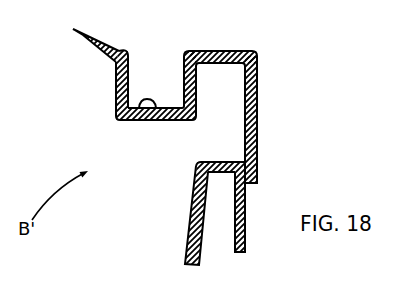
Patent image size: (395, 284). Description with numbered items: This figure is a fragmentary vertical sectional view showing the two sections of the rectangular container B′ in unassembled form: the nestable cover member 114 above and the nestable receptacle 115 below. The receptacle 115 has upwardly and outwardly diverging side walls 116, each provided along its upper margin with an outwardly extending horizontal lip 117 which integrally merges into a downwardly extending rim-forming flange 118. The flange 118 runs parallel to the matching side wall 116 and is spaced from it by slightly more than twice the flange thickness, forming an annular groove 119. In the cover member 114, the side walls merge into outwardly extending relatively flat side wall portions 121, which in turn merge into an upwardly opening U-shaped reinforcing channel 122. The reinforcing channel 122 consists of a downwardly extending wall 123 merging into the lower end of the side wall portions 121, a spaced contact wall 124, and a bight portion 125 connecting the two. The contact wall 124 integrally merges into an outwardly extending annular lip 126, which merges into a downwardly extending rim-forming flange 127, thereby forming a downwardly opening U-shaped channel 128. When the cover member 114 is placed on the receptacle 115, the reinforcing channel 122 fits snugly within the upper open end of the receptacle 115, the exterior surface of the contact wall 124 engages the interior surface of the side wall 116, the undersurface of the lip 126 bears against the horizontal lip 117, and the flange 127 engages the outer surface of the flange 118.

The nestable cover member 114 is at (78, 59).
The side wall portions 121 is at (118, 50).
The reinforcing channels 122 is at (140, 77).
The downwardly extending wall 123 is at (113, 100).
The bight portion 125 is at (150, 104).
The contact wall 124 is at (178, 68).
The annular lip 126 is at (220, 51).
The rim-forming flange 127 is at (257, 115).
The U-shaped channel 128 is at (225, 81).
The nestable receptacle 115 is at (201, 198).
The horizontal lips 117 is at (215, 162).
The annular groove 119 is at (220, 187).
The side walls 116 is at (192, 230).
The rim-forming flanges 118 is at (246, 205).